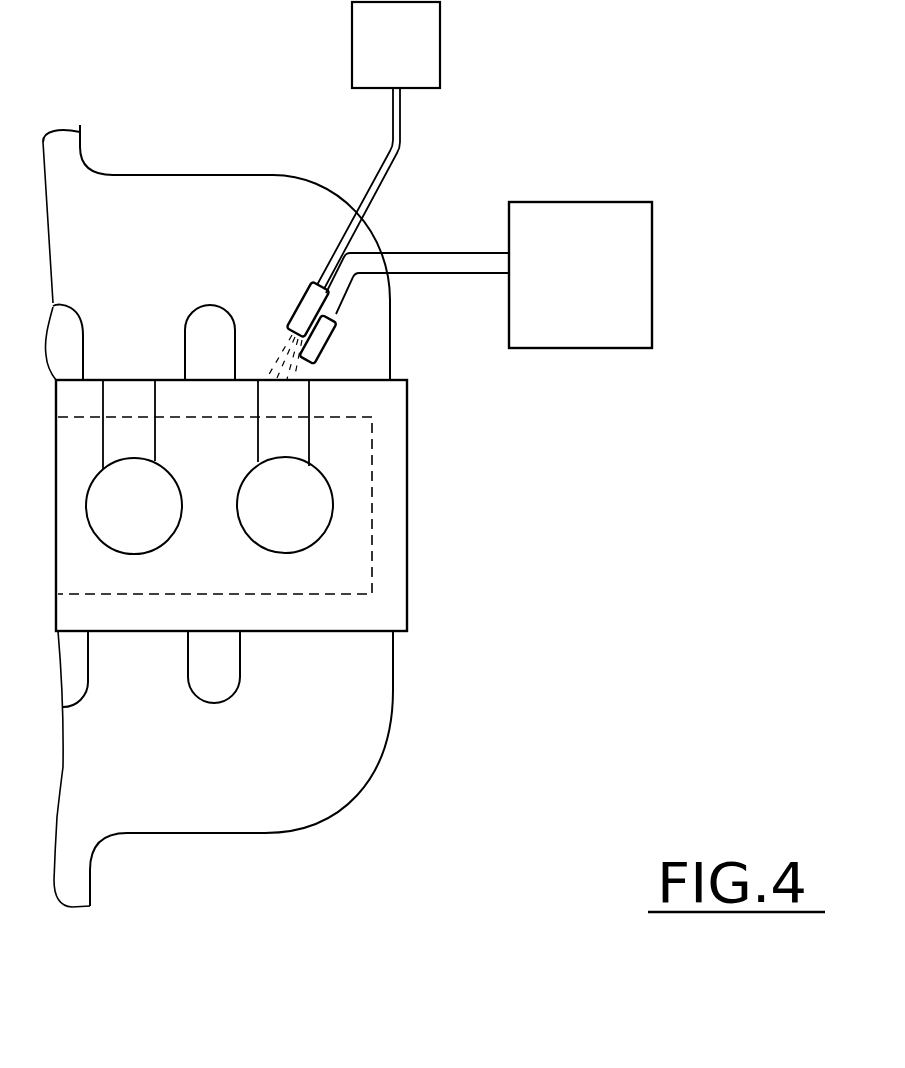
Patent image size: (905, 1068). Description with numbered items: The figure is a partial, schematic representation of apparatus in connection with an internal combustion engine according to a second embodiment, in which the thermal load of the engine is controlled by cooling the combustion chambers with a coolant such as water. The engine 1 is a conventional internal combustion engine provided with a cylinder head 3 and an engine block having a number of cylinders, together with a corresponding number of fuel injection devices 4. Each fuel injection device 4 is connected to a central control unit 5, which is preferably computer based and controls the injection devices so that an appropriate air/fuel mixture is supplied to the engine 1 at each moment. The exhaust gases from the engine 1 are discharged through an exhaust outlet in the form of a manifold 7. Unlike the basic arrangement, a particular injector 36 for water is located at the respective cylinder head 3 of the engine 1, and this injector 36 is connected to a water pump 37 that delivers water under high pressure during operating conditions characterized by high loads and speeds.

The engine 1 is at (403, 590).
The cylinder head 3 is at (373, 533).
The fuel injection device 4 is at (338, 331).
The central control unit 5 is at (570, 350).
The exhaust manifold 7 is at (362, 765).
The injector 36 is at (307, 283).
The water pump 37 is at (353, 38).